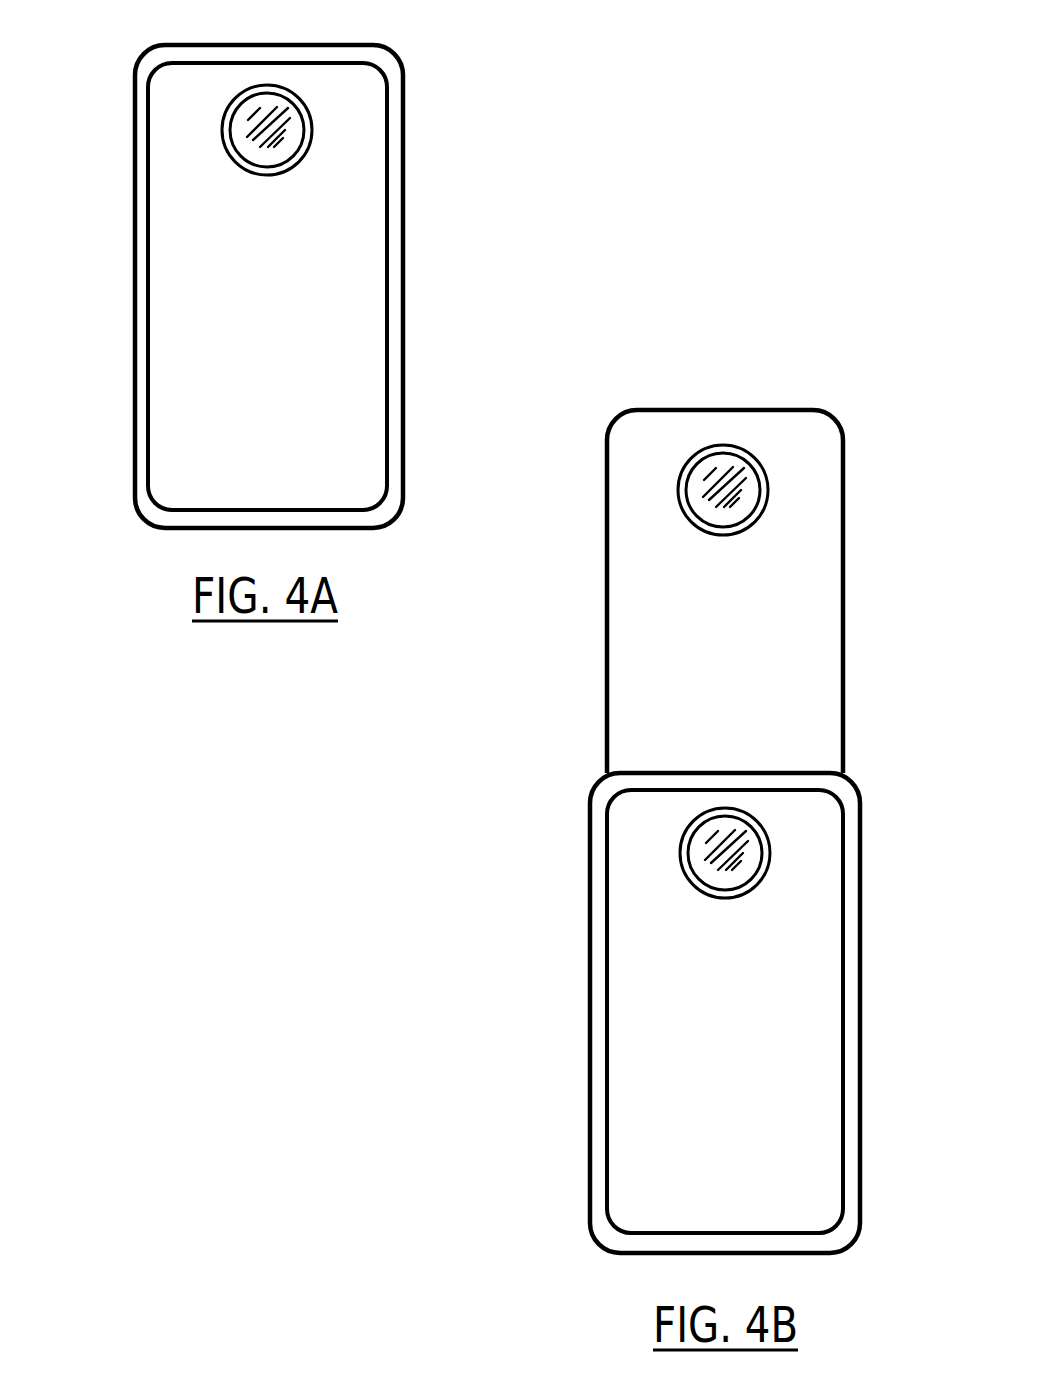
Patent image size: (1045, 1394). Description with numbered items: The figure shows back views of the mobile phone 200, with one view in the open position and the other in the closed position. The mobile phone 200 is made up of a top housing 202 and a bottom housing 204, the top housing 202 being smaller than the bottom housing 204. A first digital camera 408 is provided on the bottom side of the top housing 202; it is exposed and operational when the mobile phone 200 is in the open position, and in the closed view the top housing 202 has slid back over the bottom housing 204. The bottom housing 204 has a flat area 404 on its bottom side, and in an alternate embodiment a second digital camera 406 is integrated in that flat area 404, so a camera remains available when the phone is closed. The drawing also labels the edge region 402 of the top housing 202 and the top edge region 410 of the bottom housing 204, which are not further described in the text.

In FIG. 4A, the mobile phone 200 is at (104, 375).
In FIG. 4B, the mobile phone 200 is at (538, 780).
In FIG. 4B, the top housing 202 is at (605, 600).
In FIG. 4A, the bottom housing 204 is at (133, 83).
In FIG. 4B, the bottom housing 204 is at (862, 1052).
In FIG. 4B, the housing rear surface 402 is at (823, 565).
In FIG. 4A, the flat area 404 is at (405, 390).
In FIG. 4B, the flat area 404 is at (782, 1057).
In FIG. 4A, the second digital camera 406 is at (133, 192).
In FIG. 4B, the second digital camera 406 is at (733, 898).
In FIG. 4B, the first digital camera 408 is at (723, 444).
In FIG. 4A, the top wall 410 is at (405, 90).